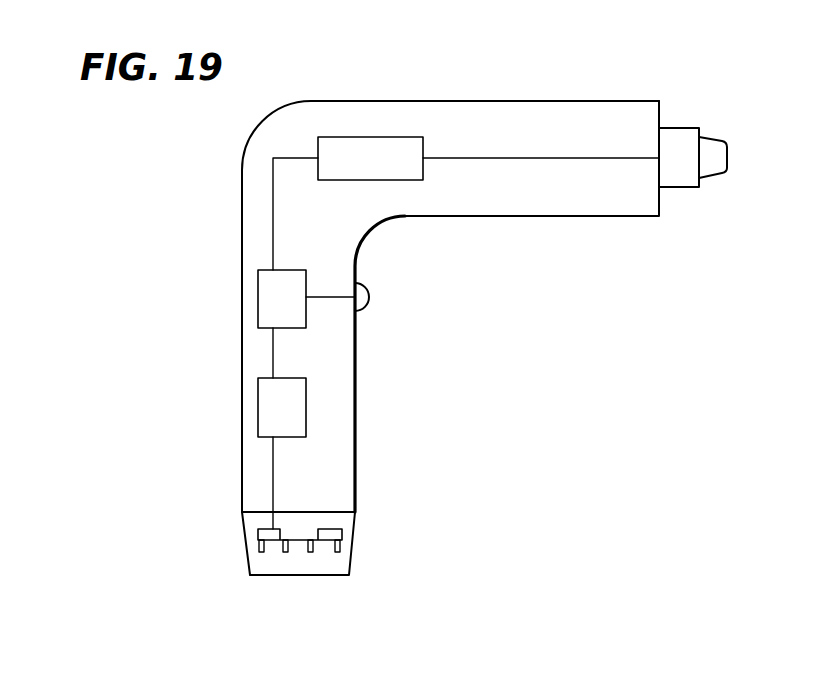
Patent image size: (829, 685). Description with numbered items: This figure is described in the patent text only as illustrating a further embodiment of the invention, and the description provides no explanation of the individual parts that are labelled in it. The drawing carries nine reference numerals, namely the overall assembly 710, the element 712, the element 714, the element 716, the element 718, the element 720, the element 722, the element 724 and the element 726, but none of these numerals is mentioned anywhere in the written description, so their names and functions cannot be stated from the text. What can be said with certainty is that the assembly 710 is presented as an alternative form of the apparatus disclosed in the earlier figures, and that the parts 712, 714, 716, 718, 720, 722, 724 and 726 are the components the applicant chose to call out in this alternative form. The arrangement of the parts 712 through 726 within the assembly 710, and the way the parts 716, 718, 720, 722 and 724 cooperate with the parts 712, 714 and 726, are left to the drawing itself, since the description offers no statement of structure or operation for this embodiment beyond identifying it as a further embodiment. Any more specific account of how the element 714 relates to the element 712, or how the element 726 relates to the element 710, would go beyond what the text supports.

The elbow-shaped housing assembly 710 is at (576, 72).
The base connector portion 712 is at (232, 564).
The vertical housing arm 714 is at (356, 467).
The connector pins 716 is at (340, 548).
The connector block 718 is at (260, 530).
The circuit module 720 is at (258, 398).
The circuit module 722 is at (258, 298).
The circuit module 724 is at (366, 137).
The actuator button 726 is at (367, 293).